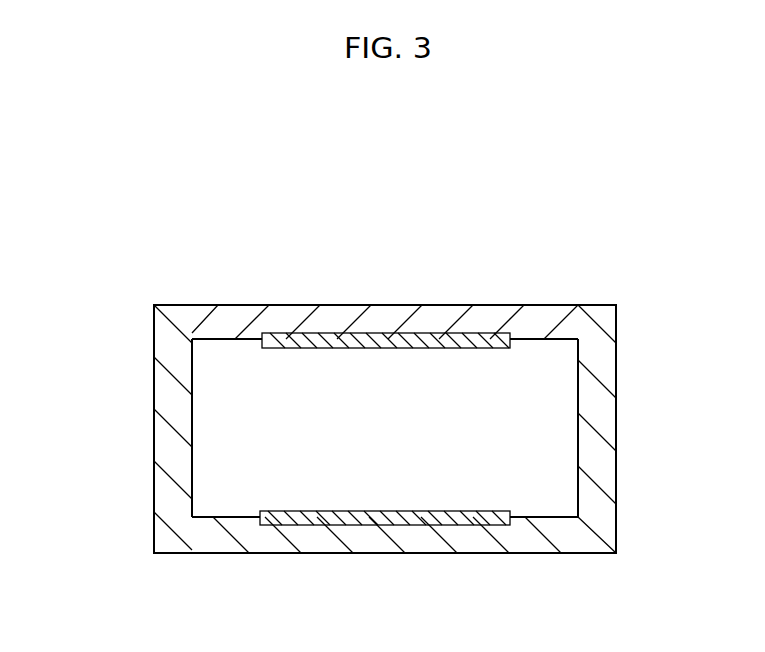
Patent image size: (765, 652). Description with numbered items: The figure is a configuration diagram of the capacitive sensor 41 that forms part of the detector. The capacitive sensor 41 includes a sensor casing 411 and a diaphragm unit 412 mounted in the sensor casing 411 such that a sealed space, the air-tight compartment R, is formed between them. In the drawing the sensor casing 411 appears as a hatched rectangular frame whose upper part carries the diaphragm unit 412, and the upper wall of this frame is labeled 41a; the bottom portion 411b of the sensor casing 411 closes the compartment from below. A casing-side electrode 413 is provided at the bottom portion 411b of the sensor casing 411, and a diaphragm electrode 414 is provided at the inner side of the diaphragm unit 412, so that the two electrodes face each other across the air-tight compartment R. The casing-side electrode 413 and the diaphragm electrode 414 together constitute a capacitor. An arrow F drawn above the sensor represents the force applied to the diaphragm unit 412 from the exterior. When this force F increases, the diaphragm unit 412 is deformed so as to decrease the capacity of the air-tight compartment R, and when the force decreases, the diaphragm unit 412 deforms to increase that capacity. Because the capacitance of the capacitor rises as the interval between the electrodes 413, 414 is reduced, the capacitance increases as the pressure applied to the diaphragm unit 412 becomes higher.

The capacitive sensor 41 is at (255, 248).
The top wall 41a is at (328, 303).
The sensor casing 411 is at (166, 446).
The bottom portion 411b is at (225, 515).
The diaphragm unit 412 is at (552, 316).
The casing-side electrode 413 is at (345, 513).
The diaphragm electrode 414 is at (368, 342).
The force F is at (443, 302).
The air-tight compartment R is at (475, 410).